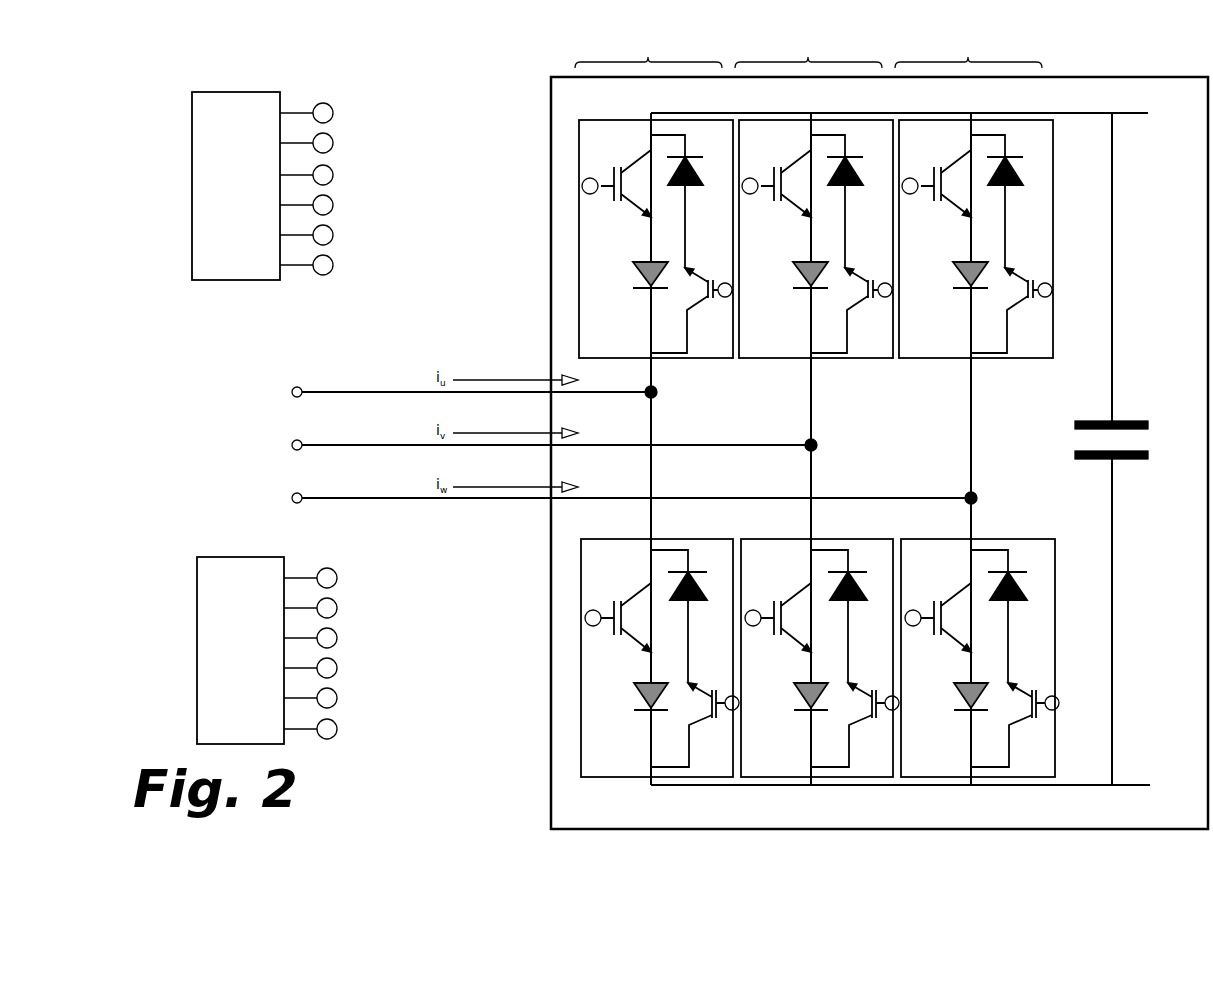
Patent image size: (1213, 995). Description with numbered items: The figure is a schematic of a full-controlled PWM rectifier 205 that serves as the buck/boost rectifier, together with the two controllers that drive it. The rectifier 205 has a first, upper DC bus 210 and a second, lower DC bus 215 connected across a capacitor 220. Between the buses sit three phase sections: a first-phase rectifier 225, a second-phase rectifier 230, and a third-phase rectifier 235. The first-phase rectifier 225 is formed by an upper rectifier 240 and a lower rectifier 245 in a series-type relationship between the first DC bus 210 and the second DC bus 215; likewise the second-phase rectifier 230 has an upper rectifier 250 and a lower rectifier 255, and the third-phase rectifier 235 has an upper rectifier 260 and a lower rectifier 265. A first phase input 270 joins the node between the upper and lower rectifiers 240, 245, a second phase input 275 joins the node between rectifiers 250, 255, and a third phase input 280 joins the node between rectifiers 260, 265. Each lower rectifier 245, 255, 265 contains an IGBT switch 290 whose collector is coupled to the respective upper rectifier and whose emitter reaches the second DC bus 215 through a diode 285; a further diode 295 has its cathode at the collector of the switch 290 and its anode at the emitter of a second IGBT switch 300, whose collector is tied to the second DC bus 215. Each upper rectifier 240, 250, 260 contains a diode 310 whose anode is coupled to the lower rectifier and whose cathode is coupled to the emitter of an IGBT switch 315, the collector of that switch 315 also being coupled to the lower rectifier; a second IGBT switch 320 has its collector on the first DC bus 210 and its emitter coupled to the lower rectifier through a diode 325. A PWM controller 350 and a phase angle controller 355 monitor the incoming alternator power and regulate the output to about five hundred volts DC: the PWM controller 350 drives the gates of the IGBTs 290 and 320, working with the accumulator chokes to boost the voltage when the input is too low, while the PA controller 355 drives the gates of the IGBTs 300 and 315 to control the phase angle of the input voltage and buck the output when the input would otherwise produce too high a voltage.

The full-controlled PWM rectifier 205 is at (549, 78).
The first DC bus 210 is at (1073, 113).
The second DC bus 215 is at (1096, 787).
The capacitor 220 is at (1097, 421).
The first-phase rectifier 225 is at (648, 54).
The second-phase rectifier 230 is at (808, 54).
The third-phase rectifier 235 is at (968, 54).
The upper rectifier 240 is at (712, 362).
The lower rectifier 245 is at (668, 536).
The upper rectifier 250 is at (867, 362).
The lower rectifier 255 is at (746, 536).
The upper rectifier 260 is at (1025, 362).
The lower rectifier 265 is at (903, 536).
The first phase input 270 is at (303, 386).
The second phase input 275 is at (303, 439).
The third phase input 280 is at (303, 492).
The diode 285 is at (639, 702).
The switch 290 is at (607, 637).
The diode 295 is at (700, 584).
The second switch 300 is at (713, 720).
The diode 310 is at (691, 168).
The switch 315 is at (710, 300).
The second switch 320 is at (613, 169).
The diode 325 is at (637, 273).
The PWM controller 350 is at (192, 190).
The PA controller 355 is at (197, 652).